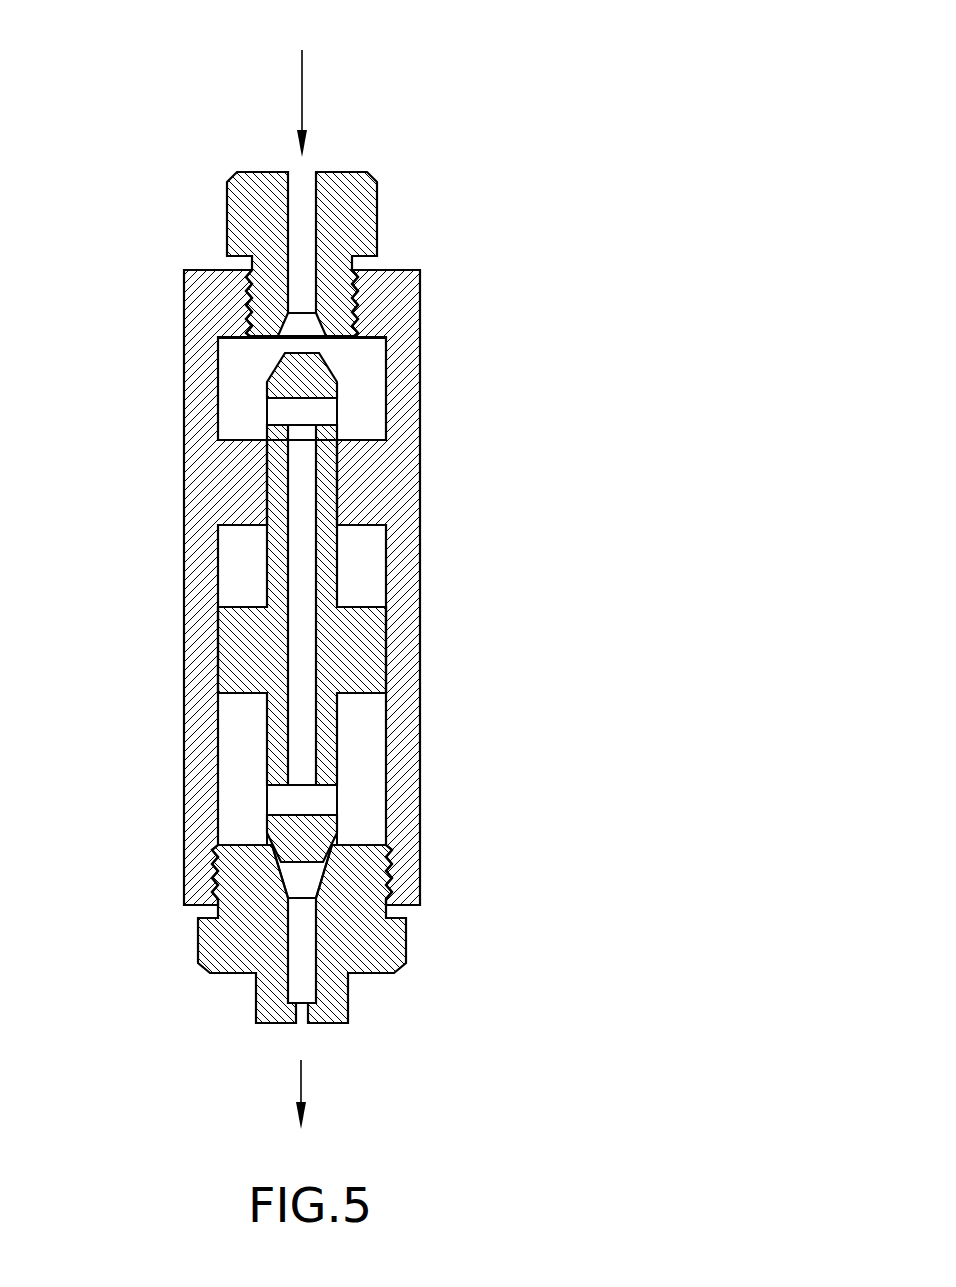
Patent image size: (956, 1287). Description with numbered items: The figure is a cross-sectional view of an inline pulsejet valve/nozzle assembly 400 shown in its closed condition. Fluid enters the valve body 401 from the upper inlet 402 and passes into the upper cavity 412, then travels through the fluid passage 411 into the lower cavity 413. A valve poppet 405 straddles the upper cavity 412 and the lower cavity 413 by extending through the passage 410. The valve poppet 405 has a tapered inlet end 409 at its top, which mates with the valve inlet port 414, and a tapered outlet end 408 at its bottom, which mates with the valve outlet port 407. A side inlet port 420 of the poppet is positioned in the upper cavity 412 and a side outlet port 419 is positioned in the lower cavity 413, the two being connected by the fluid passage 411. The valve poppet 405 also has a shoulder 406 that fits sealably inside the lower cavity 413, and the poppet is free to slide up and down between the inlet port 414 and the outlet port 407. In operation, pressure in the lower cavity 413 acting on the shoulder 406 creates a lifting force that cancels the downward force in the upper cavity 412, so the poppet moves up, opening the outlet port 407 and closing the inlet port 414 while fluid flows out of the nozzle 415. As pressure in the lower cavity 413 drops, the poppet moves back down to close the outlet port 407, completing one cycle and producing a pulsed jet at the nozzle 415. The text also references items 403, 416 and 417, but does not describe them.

The valve/nozzle assembly 400 is at (462, 126).
The valve body 401 is at (400, 283).
The upper inlet 402 is at (304, 180).
The outlet fitting 403 is at (225, 940).
The valve poppet 405 is at (325, 485).
The shoulder 406 is at (360, 655).
The valve outlet port 407 is at (333, 853).
The tapered outlet end 408 is at (337, 835).
The tapered inlet end 409 is at (278, 358).
The passage 410 is at (267, 472).
The fluid passage 411 is at (300, 653).
The upper cavity 412 is at (370, 355).
The lower cavity 413 is at (370, 740).
The valve inlet port 414 is at (273, 328).
The nozzle 415 is at (302, 1024).
The annular chamber 416 is at (370, 569).
The annular chamber 417 is at (220, 562).
The side outlet port 419 is at (320, 800).
The side inlet port 420 is at (325, 411).